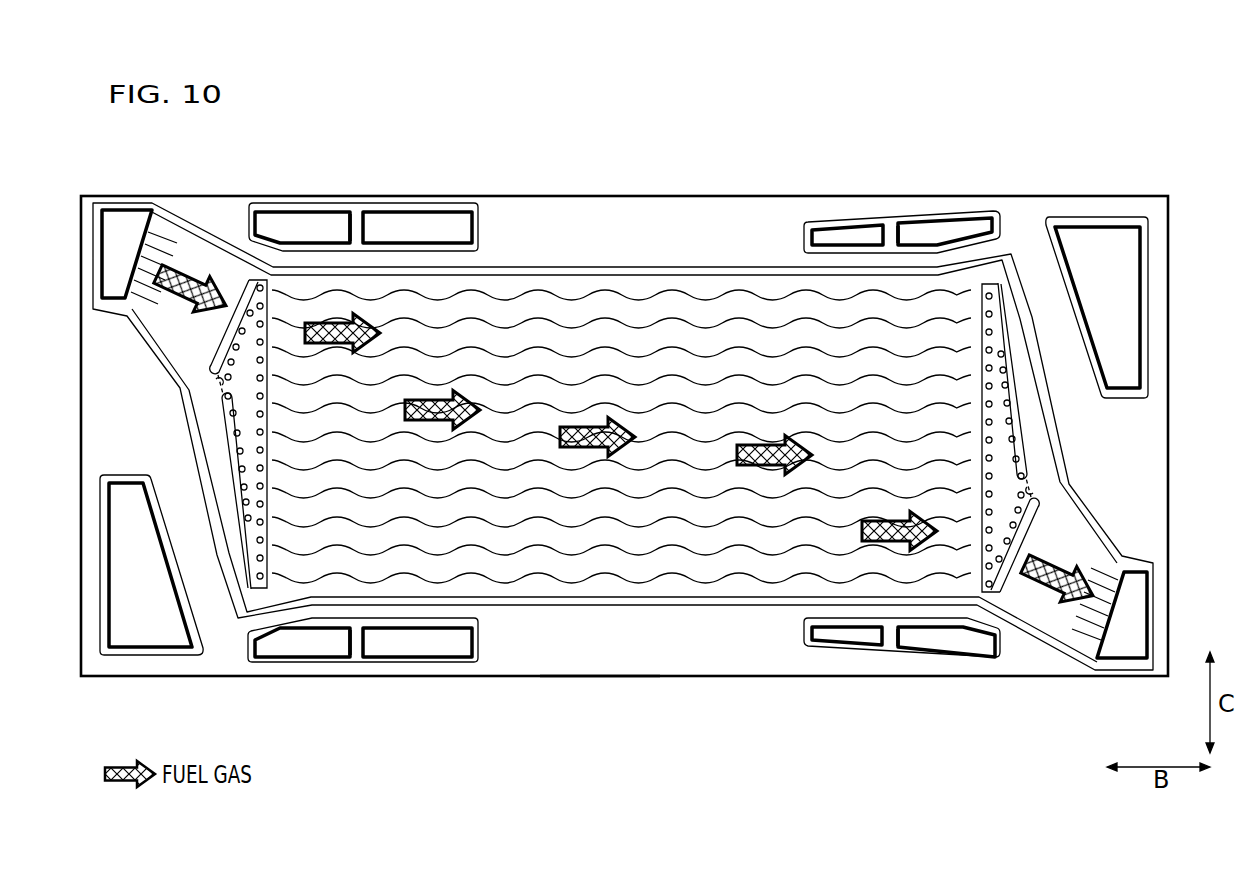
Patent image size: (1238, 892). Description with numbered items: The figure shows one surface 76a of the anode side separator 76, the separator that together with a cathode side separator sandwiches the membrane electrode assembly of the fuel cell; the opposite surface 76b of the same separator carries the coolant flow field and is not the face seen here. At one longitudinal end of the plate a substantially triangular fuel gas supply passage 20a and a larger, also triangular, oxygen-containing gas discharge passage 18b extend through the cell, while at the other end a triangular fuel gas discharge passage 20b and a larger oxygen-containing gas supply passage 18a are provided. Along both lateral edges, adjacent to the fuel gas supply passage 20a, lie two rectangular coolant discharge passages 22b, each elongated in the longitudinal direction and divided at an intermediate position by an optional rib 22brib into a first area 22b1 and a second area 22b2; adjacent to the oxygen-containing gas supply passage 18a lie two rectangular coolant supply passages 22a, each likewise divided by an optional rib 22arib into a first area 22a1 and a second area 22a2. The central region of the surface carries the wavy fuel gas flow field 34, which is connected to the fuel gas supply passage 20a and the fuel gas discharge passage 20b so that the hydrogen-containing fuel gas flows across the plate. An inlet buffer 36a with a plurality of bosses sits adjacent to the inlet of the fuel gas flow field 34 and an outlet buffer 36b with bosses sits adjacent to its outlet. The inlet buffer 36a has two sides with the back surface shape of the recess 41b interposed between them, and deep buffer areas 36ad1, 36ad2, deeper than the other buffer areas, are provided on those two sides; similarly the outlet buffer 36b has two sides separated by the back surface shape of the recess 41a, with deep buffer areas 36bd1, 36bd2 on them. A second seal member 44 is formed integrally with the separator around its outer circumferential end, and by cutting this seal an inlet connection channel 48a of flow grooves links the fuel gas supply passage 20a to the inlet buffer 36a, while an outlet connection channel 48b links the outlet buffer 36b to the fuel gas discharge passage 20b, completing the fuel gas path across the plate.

The anode side separator 76 is at (272, 114).
The surface 76a is at (625, 660).
The surface 76b is at (572, 660).
The fuel gas supply passage 20a is at (118, 235).
The fuel gas discharge passage 20b is at (1120, 643).
The oxygen-containing gas supply passage 18a is at (1098, 235).
The oxygen-containing gas discharge passage 18b is at (133, 635).
The coolant supply passage 22a is at (960, 150).
The first area 22a1 is at (942, 237).
The second area 22a2 is at (860, 240).
The rib 22arib is at (888, 242).
The coolant discharge passage 22b is at (418, 150).
The first area 22b1 is at (320, 224).
The second area 22b2 is at (398, 224).
The rib 22brib is at (357, 238).
The second seal member 44 is at (548, 265).
The fuel gas flow field 34 is at (617, 322).
The inlet buffer 36a is at (247, 450).
The outlet buffer 36b is at (1003, 420).
The deep buffer area 36ad1 is at (225, 362).
The deep buffer area 36ad2 is at (223, 437).
The deep buffer area 36bd1 is at (1020, 430).
The deep buffer area 36bd2 is at (1030, 505).
The recess 41a is at (1035, 474).
The recess 41b is at (219, 388).
The inlet connection channel 48a is at (152, 290).
The outlet connection channel 48b is at (1098, 568).